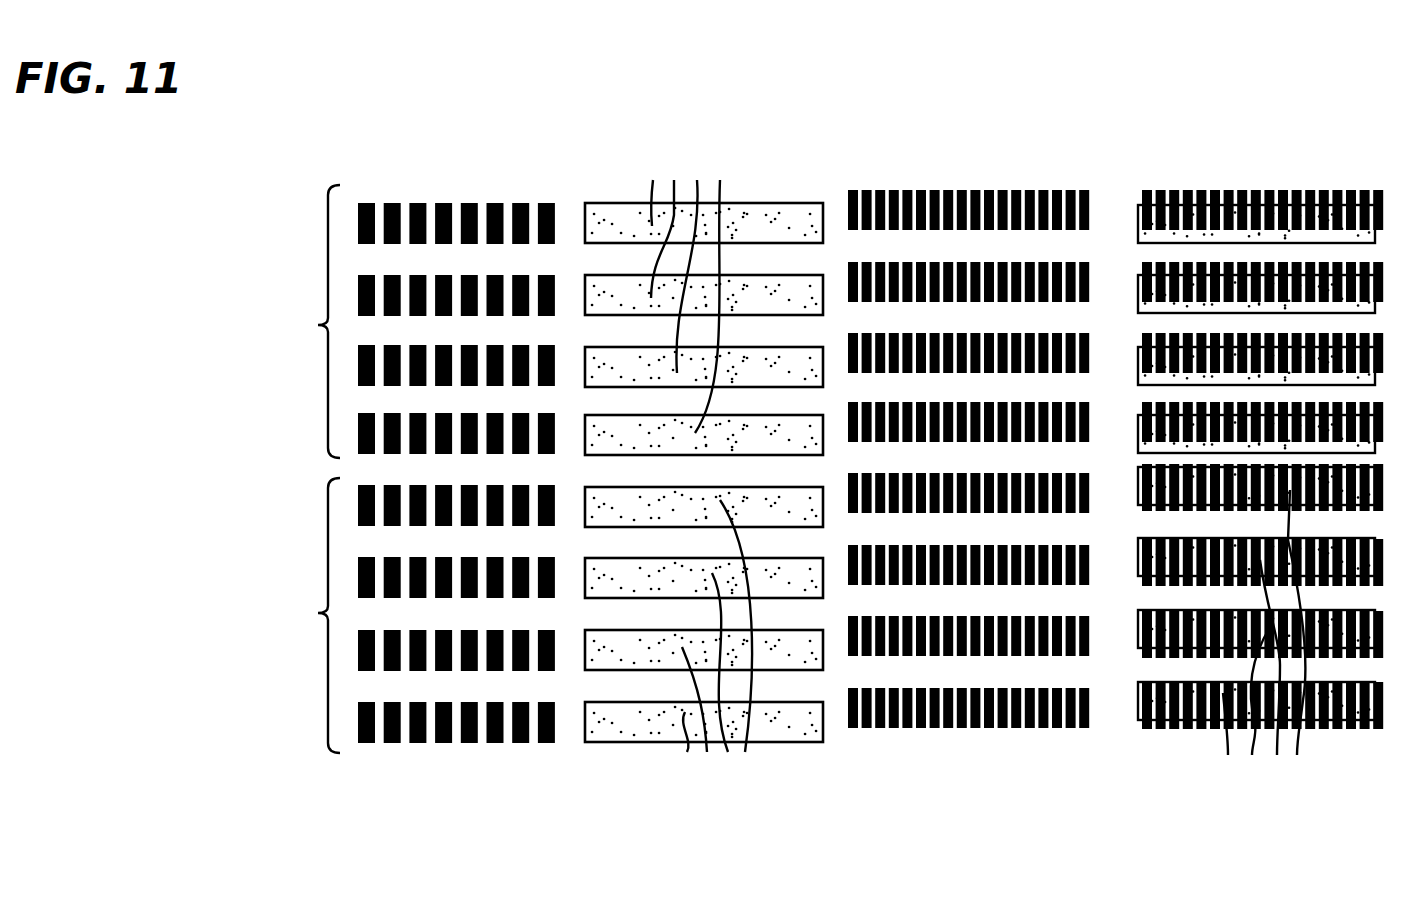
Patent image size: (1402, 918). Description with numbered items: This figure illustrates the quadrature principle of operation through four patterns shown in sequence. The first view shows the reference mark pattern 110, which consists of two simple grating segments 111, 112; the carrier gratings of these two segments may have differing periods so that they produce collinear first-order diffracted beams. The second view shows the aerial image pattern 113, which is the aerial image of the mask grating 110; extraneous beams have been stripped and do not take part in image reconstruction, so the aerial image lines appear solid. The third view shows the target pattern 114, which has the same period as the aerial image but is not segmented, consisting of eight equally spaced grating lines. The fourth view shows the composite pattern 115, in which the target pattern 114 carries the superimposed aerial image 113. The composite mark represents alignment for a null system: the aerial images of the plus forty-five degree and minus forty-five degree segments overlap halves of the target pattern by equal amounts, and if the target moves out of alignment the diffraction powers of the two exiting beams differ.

The reference mark pattern 110 is at (469, 113).
The first grating segment 111 is at (305, 321).
The second grating segment 112 is at (306, 615).
The aerial image pattern 113 is at (716, 113).
The target pattern 114 is at (988, 113).
The composite pattern 115 is at (1286, 113).